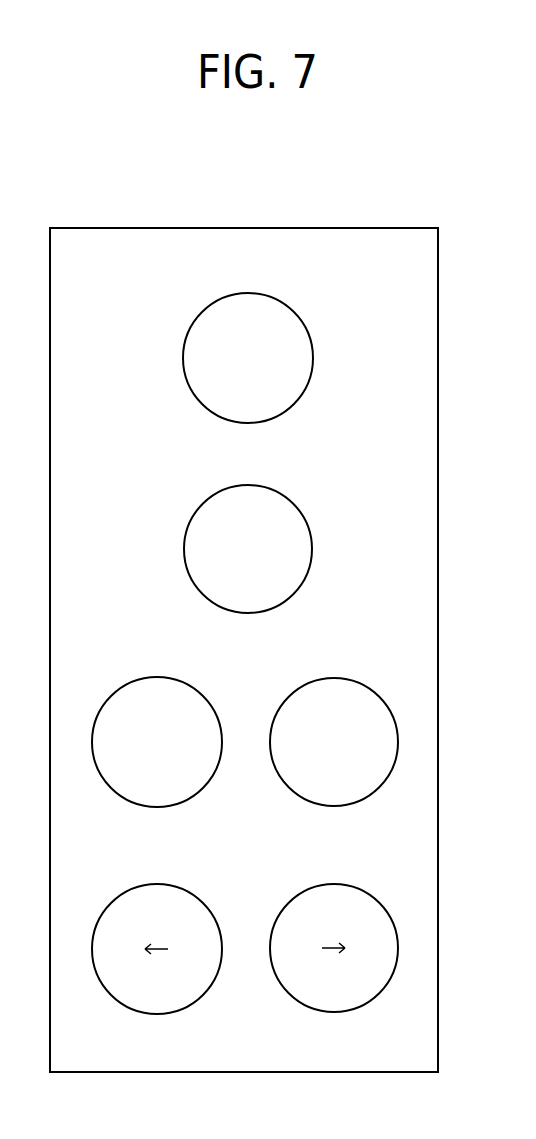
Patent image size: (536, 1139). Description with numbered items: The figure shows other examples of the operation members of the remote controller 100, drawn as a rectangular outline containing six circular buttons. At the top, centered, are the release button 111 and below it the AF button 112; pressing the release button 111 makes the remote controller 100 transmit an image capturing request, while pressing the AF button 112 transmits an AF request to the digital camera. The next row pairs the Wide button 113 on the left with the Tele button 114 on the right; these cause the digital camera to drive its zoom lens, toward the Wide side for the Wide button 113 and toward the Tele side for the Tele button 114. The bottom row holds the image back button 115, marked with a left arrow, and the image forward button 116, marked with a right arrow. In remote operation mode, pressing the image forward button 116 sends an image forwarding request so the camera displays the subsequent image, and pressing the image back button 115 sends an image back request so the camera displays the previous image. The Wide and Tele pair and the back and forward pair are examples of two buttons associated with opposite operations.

The remote controller 100 is at (243, 228).
The release button 111 is at (322, 298).
The AF button 112 is at (294, 505).
The Wide button 113 is at (138, 679).
The Tele button 114 is at (340, 679).
The image back button 115 is at (136, 887).
The image forward button 116 is at (355, 889).